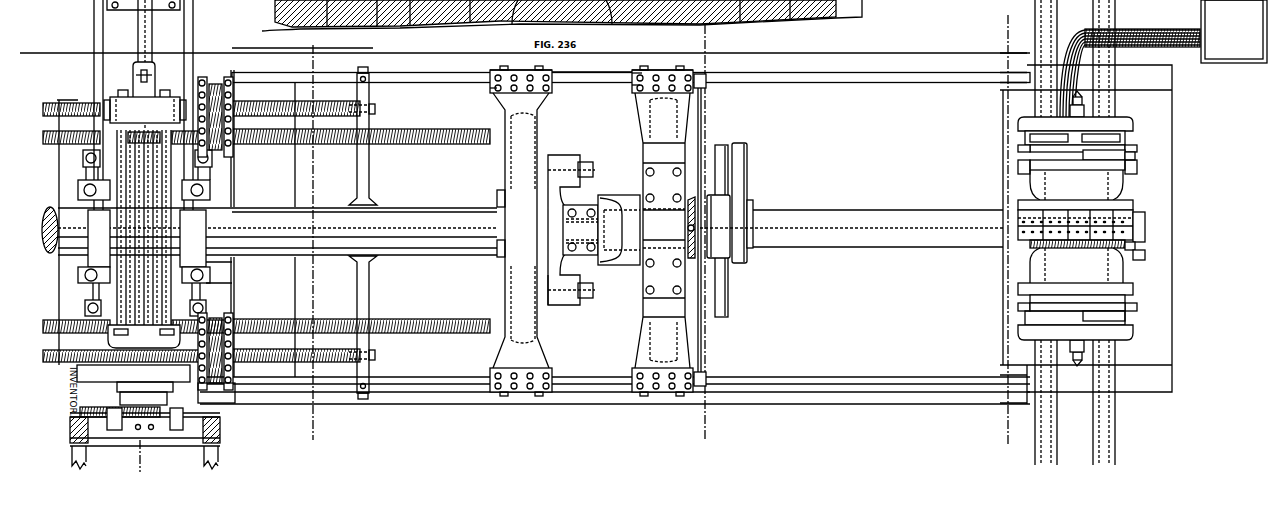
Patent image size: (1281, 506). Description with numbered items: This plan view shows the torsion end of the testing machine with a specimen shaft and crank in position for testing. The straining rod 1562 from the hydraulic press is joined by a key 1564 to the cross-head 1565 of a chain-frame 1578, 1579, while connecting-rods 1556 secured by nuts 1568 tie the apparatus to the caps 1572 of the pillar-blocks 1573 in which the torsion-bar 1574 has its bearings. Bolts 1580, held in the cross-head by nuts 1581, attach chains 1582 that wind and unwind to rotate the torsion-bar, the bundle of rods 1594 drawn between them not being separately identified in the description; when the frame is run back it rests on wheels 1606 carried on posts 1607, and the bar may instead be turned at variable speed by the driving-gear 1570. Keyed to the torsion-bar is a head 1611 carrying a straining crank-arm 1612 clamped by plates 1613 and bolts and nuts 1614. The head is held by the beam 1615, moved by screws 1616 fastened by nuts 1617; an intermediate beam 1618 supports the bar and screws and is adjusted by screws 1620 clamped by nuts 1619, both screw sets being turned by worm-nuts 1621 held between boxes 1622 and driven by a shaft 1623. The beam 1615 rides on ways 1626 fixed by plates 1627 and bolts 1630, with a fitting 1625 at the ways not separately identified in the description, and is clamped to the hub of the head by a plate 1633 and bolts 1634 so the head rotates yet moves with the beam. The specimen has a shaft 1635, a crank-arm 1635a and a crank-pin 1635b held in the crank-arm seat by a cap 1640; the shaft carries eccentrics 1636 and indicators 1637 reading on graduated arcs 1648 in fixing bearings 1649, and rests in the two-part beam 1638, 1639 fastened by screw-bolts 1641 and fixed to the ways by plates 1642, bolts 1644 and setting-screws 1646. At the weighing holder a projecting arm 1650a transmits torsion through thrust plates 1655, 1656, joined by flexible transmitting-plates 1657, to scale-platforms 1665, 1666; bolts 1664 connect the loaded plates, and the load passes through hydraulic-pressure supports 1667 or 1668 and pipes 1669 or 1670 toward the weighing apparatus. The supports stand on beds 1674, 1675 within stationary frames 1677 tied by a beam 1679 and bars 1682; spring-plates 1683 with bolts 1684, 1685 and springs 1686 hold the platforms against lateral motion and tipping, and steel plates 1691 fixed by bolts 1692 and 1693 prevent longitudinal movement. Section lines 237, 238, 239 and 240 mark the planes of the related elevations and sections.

The section line 237 is at (314, 242).
The section line 238 is at (1010, 230).
The section line 239 is at (143, 456).
The section line 240 is at (707, 232).
The connecting-rods 1556 is at (150, 105).
The straining rod 1562 is at (143, 65).
The key 1564 is at (152, 81).
The cross-head 1565 is at (136, 96).
The nuts 1568 is at (132, 239).
The driving-gear 1570 is at (133, 385).
The pillar-block caps 1572 is at (144, 246).
The pillar-blocks 1573 is at (134, 299).
The torsion-bar 1574 is at (277, 231).
The chain-frame cross-head 1578 is at (144, 336).
The chain-frame 1579 is at (145, 175).
The bolts 1580 is at (145, 110).
The nuts 1581 is at (154, 90).
The chains 1582 is at (139, 134).
The rods 1594 is at (144, 229).
The wheels 1606 is at (145, 418).
The posts 1607 is at (157, 426).
The head 1611 is at (571, 224).
The straining crank-arm 1612 is at (564, 284).
The clamp-plates 1613 is at (575, 220).
The bolts and nuts 1614 is at (595, 230).
The beam 1615 is at (521, 217).
The screws 1616 is at (266, 226).
The nuts 1617 is at (526, 259).
The intermediate beam 1618 is at (371, 233).
The nuts 1619 is at (374, 228).
The screws 1620 is at (201, 227).
The worm-nuts 1621 is at (215, 270).
The boxes 1622 is at (245, 231).
The shaft 1623 is at (219, 275).
The beam end 1625 is at (485, 89).
The ways 1626 is at (631, 78).
The plates 1627 is at (592, 67).
The bolts 1630 is at (521, 65).
The plate 1633 is at (492, 246).
The bolts 1634 is at (492, 205).
The specimen shaft 1635 is at (851, 228).
The specimen crank-arm 1635a is at (619, 222).
The specimen crank-pin 1635b is at (580, 230).
The eccentrics 1636 is at (739, 230).
The indicators 1637 is at (699, 223).
The beam part 1638 is at (662, 269).
The beam part 1639 is at (662, 104).
The cap 1640 is at (581, 232).
The screw-bolts 1641 is at (663, 231).
The plates 1642 is at (623, 69).
The bolts 1644 is at (662, 64).
The setting-screws 1646 is at (626, 89).
The graduated arcs 1648 is at (709, 230).
The fixing bearing 1649 is at (712, 230).
The projecting arm 1650a is at (1075, 224).
The thrust plates 1655 is at (1076, 185).
The thrust plates 1656 is at (1076, 265).
The flexible transmitting-plates 1657 is at (1013, 144).
The bolts 1664 is at (1139, 158).
The scale-platform 1665 is at (1077, 167).
The scale-platform 1666 is at (1075, 293).
The hydraulic-pressure supports 1667 is at (1104, 155).
The hydraulic-pressure supports 1668 is at (1075, 314).
The pipes 1669 is at (1047, 59).
The pipes 1670 is at (1100, 59).
The bed 1674 is at (1075, 131).
The bed 1675 is at (1075, 332).
The stationary frames 1677 is at (1075, 402).
The beam 1679 is at (1134, 259).
The bars 1682 is at (1085, 199).
The spring-plates 1683 is at (1077, 228).
The bolts 1684 is at (1087, 229).
The bolts 1685 is at (1079, 228).
The springs 1686 is at (1087, 228).
The steel plates 1691 is at (1136, 249).
The bolts 1692 is at (1130, 228).
The bolts 1693 is at (1077, 250).